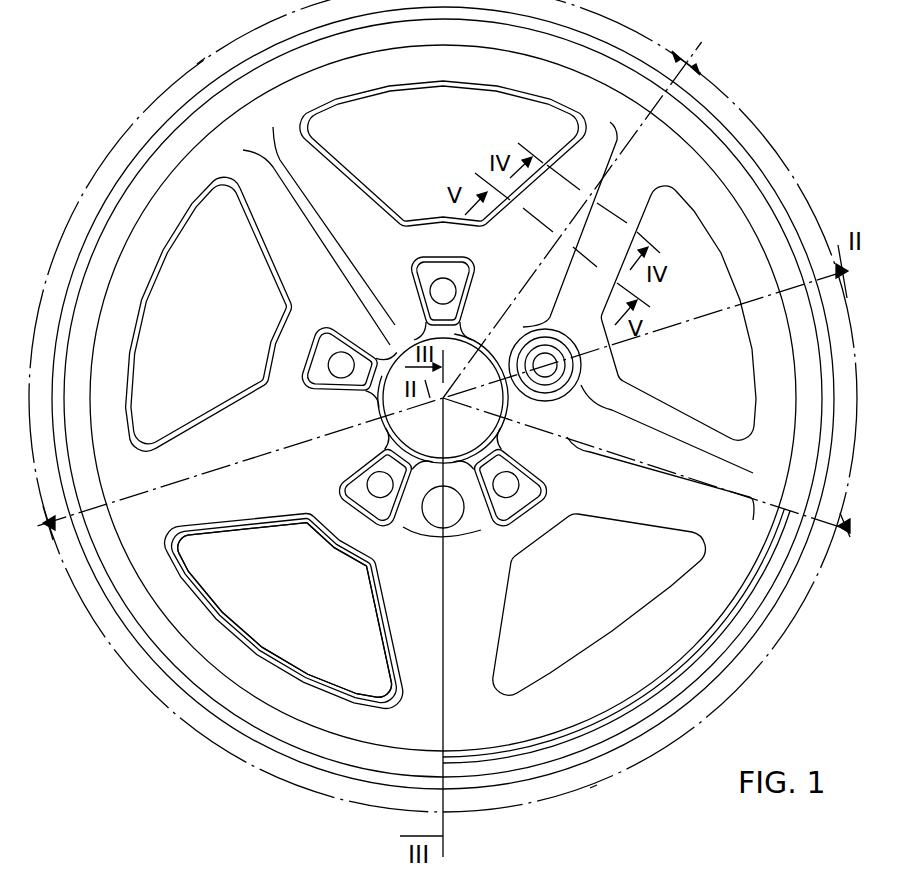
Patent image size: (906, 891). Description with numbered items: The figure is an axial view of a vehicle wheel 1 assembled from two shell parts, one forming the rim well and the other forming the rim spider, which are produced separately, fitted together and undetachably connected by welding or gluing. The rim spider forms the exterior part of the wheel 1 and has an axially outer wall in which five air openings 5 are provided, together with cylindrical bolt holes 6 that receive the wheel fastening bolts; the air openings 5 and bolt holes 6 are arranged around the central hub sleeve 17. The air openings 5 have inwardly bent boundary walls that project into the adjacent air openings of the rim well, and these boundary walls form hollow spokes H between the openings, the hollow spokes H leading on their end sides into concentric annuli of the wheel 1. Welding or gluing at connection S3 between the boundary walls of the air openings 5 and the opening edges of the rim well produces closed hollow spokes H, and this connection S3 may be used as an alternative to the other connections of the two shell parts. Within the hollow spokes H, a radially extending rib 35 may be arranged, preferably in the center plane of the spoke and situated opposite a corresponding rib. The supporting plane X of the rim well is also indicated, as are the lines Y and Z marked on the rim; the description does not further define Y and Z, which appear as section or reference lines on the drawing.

The wheel 1 is at (751, 100).
The air openings 5 is at (444, 148).
The bolt holes 6 is at (553, 377).
The hub sleeve 17 is at (458, 500).
The rib 35 is at (345, 255).
The hollow spokes H is at (307, 263).
The connection S3 is at (330, 687).
The supporting plane X is at (597, 785).
The rim outer line Y is at (797, 180).
The rim outer line Z is at (197, 64).